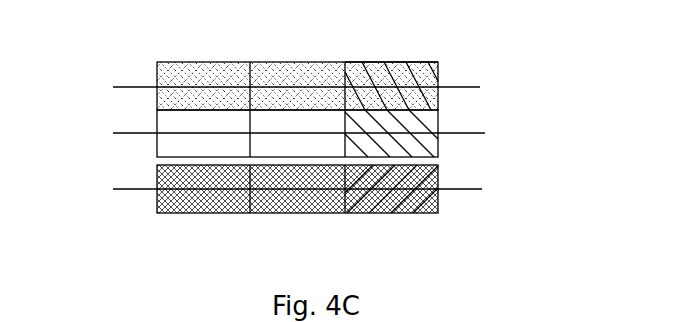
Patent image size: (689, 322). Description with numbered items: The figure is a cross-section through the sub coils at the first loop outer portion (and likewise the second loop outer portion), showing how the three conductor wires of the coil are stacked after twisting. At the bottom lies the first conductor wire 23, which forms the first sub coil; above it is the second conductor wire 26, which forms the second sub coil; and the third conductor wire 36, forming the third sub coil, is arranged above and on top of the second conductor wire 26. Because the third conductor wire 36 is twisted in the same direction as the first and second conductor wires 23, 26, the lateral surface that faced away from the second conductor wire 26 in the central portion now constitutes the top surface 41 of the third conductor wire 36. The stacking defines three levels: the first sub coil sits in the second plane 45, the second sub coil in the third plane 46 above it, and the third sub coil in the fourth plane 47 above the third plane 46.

The first conductor wire 23 is at (440, 167).
The second conductor wire 26 is at (400, 128).
The third conductor wire 36 is at (417, 83).
The top surface of the third conductor wire 41 is at (390, 65).
The second plane 45 is at (131, 189).
The third plane 46 is at (131, 133).
The fourth plane 47 is at (131, 87).